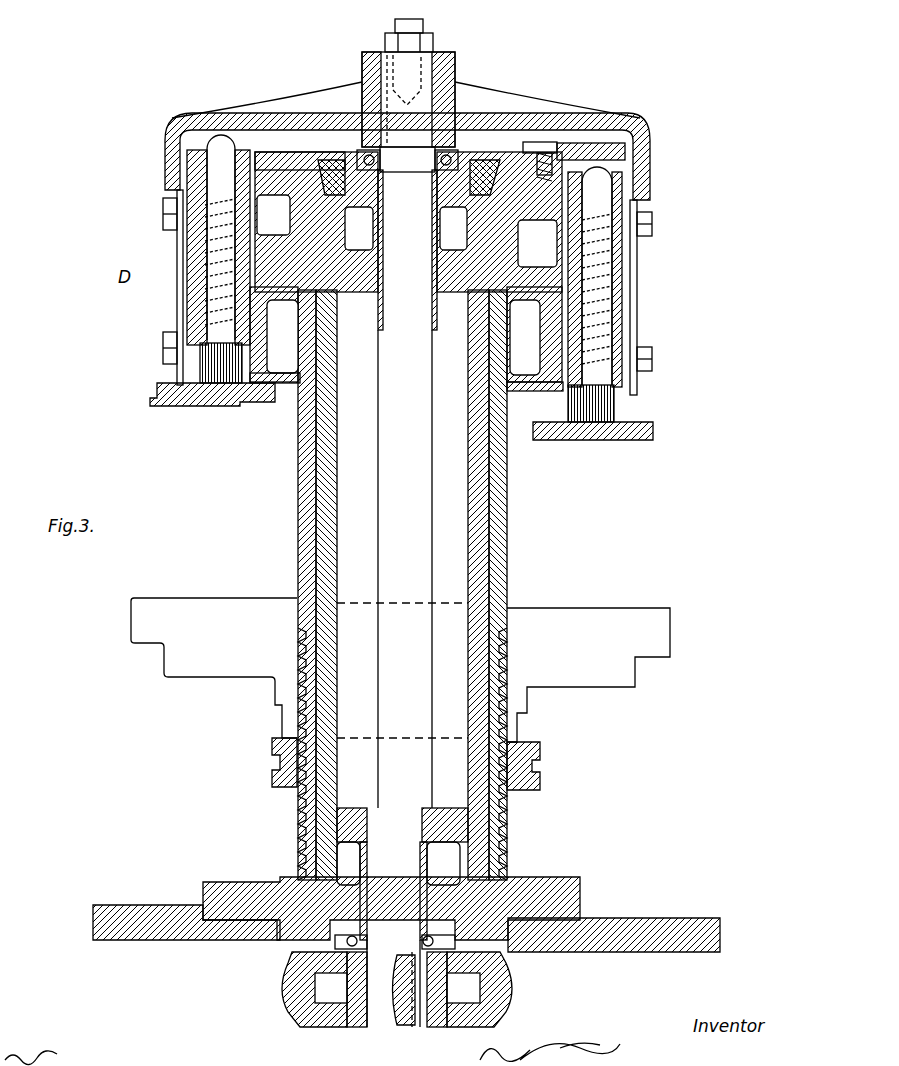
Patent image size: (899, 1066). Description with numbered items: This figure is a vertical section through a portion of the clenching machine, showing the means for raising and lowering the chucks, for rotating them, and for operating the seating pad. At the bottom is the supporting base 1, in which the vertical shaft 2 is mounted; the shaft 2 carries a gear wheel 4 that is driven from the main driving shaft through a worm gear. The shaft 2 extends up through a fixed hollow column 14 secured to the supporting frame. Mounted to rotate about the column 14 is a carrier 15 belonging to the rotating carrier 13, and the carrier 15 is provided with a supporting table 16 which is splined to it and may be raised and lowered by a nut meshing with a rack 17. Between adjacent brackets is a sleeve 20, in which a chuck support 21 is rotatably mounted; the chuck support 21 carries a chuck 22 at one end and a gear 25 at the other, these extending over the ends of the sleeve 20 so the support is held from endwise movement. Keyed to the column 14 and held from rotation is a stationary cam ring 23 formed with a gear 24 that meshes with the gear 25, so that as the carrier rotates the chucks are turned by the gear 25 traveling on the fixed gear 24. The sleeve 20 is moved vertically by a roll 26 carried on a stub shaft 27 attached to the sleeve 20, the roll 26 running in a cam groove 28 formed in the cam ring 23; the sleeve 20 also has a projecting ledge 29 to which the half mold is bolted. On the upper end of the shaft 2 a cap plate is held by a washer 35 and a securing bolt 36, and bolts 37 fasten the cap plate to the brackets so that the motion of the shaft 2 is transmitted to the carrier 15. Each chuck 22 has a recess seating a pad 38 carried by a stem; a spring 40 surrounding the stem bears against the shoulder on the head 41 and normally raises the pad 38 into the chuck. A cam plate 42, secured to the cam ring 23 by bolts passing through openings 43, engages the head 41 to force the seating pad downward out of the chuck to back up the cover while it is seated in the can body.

The supporting base 1 is at (612, 922).
The shaft 2 is at (362, 1040).
The gear wheel 4 is at (290, 990).
The rotating carrier 13 is at (184, 692).
The fixed hollow column 14 is at (465, 566).
The carrier 15 is at (505, 520).
The supporting table 16 is at (596, 612).
The rack 17 is at (500, 840).
The sleeve 20 is at (258, 350).
The chuck support 21 is at (200, 360).
The chuck 22 is at (222, 400).
The stationary cam ring 23 is at (517, 160).
The gear 24 is at (262, 150).
The gear 25 is at (168, 128).
The roll 26 is at (300, 175).
The stub shaft 27 is at (670, 214).
The cam groove 28 is at (403, 337).
The projecting ledge 29 is at (275, 372).
The washer 35 is at (435, 62).
The securing bolt 36 is at (415, 40).
The bolts 37 is at (462, 105).
The pad 38 is at (215, 376).
The spring 40 is at (215, 305).
The head 41 is at (212, 165).
The cam plate 42 is at (575, 143).
The openings 43 is at (535, 147).